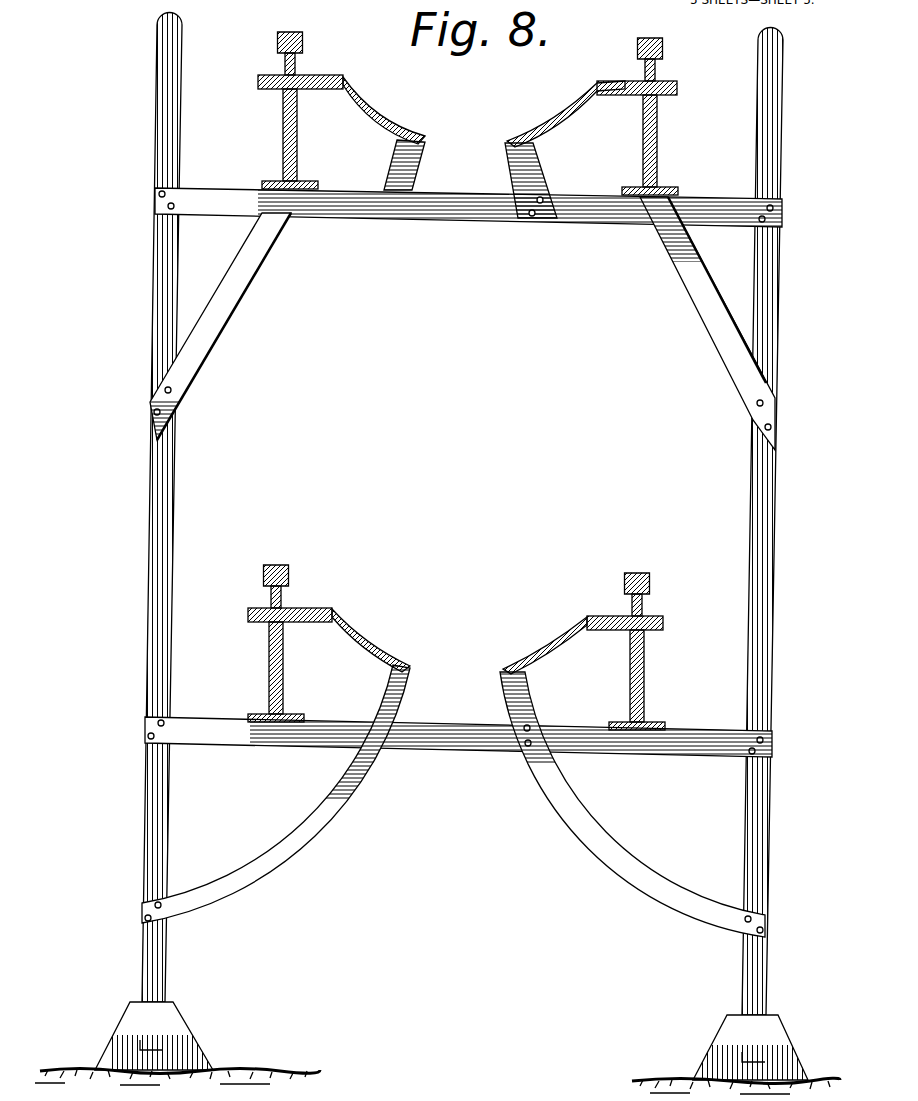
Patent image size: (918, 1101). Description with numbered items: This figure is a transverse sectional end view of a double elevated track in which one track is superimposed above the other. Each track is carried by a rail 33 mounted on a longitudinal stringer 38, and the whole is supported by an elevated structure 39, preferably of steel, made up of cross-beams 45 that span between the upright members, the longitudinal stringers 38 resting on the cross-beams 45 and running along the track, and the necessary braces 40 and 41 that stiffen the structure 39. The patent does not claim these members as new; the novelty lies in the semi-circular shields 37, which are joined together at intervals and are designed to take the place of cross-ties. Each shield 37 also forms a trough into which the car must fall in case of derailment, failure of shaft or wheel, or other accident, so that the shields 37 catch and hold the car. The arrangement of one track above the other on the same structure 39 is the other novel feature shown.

The rail 33 is at (281, 34).
The semi-circular shield 37 is at (379, 118).
The longitudinal stringer 38 is at (278, 122).
The elevated structure 39 is at (157, 121).
The brace 40 is at (303, 842).
The brace 41 is at (220, 324).
The cross-beam 45 is at (463, 213).